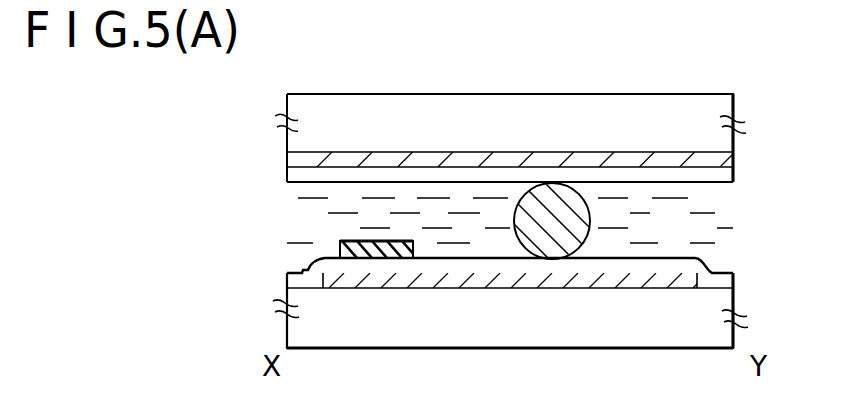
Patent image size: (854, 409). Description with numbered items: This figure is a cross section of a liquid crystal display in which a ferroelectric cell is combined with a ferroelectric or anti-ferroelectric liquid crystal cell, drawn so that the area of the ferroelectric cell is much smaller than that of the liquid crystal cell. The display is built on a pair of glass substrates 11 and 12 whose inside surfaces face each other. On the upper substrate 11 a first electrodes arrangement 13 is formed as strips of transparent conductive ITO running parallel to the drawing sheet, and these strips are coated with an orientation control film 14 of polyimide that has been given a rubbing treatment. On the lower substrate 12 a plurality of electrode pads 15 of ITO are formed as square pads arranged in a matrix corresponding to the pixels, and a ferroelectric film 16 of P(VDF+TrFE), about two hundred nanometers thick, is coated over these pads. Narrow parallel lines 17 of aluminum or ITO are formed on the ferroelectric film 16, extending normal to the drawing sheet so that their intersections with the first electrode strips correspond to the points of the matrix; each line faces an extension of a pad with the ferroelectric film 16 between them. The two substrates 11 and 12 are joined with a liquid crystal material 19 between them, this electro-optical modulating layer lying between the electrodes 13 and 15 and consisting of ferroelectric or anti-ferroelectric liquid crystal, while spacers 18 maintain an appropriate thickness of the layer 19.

The glass substrate 11 is at (685, 122).
The glass substrate 12 is at (367, 335).
The first electrodes arrangement 13 is at (508, 158).
The orientation control film 14 is at (718, 174).
The electrode pads 15 is at (472, 288).
The ferroelectric film 16 is at (300, 272).
The narrow parallel lines 17 is at (340, 244).
The spacers 18 is at (575, 238).
The liquid crystal material 19 is at (510, 221).